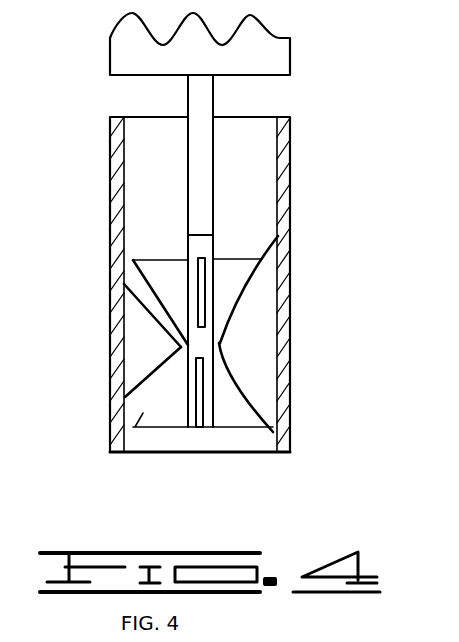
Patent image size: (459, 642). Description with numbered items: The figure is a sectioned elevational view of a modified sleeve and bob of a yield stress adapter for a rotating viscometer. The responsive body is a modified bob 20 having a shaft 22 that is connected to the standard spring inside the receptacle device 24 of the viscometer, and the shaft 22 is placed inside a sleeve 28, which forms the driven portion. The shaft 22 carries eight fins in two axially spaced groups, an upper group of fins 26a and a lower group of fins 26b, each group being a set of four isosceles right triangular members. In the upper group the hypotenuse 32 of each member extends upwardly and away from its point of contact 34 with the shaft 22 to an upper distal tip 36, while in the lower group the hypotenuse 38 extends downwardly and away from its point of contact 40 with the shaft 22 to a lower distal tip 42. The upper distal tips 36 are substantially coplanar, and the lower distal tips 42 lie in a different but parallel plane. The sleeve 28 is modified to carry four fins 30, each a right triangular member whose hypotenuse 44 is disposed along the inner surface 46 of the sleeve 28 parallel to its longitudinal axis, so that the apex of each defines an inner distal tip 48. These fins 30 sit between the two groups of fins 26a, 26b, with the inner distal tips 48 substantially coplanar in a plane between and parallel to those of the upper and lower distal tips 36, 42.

The modified bob 20 is at (187, 458).
The shaft 22 is at (187, 198).
The receptacle device 24 is at (123, 60).
The fins 26a is at (165, 270).
The fins 26b is at (170, 415).
The sleeve 28 is at (112, 162).
The fins 30 is at (142, 338).
The hypotenuse 32 is at (262, 262).
The point of contact 34 is at (218, 328).
The upper distal tip 36 is at (270, 243).
The hypotenuse 38 is at (220, 351).
The point of contact 40 is at (216, 357).
The lower distal tip 42 is at (277, 432).
The hypotenuse 44 is at (123, 332).
The inner surface 46 is at (276, 178).
The inner distal tip 48 is at (185, 345).